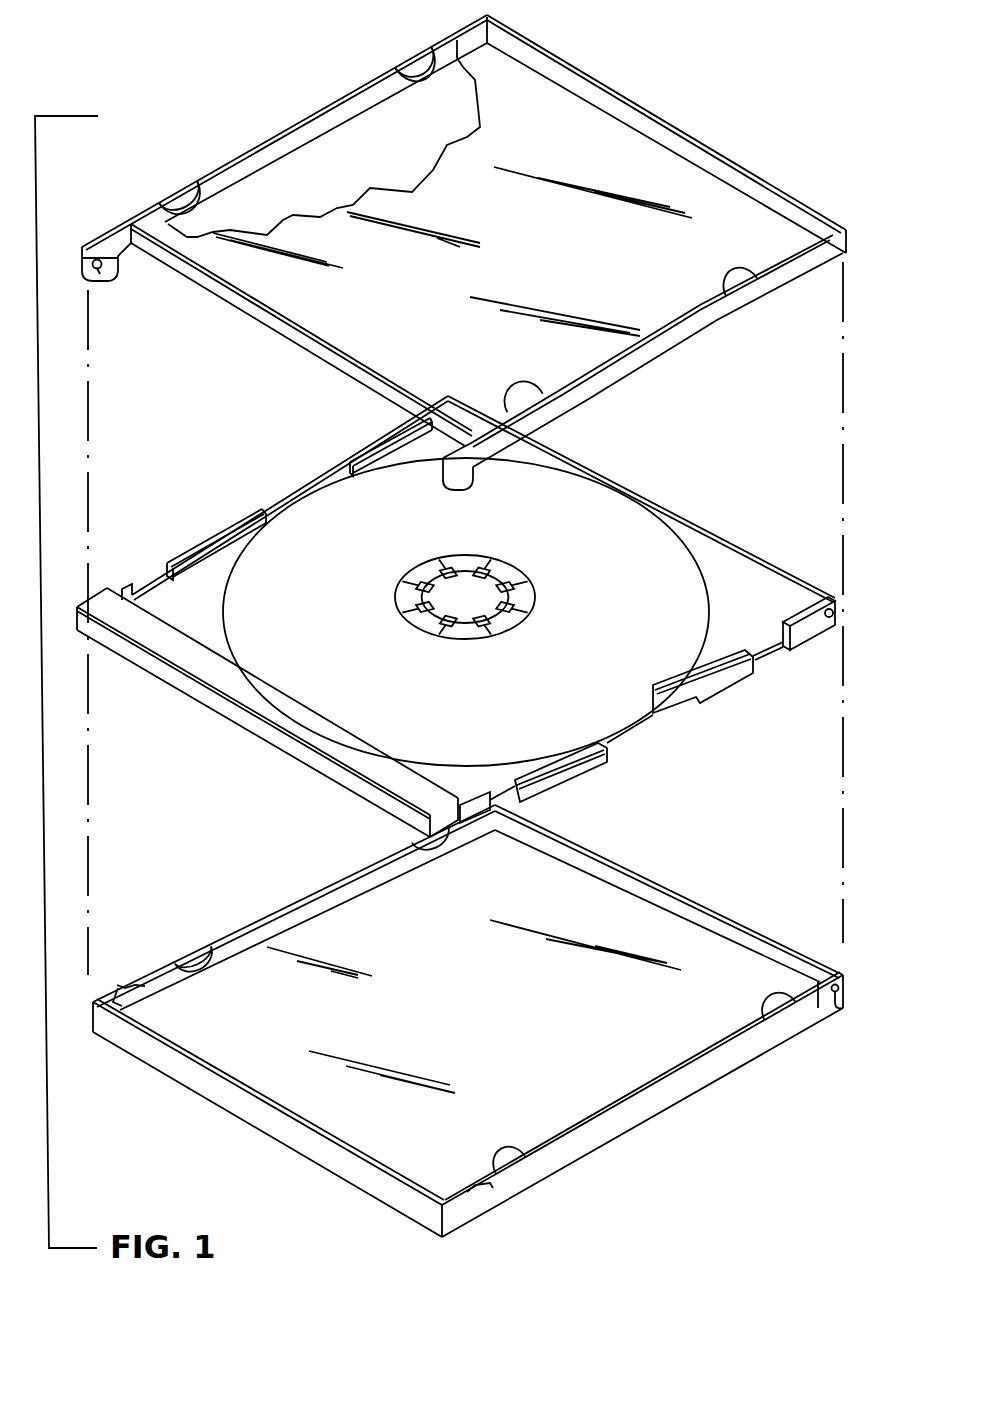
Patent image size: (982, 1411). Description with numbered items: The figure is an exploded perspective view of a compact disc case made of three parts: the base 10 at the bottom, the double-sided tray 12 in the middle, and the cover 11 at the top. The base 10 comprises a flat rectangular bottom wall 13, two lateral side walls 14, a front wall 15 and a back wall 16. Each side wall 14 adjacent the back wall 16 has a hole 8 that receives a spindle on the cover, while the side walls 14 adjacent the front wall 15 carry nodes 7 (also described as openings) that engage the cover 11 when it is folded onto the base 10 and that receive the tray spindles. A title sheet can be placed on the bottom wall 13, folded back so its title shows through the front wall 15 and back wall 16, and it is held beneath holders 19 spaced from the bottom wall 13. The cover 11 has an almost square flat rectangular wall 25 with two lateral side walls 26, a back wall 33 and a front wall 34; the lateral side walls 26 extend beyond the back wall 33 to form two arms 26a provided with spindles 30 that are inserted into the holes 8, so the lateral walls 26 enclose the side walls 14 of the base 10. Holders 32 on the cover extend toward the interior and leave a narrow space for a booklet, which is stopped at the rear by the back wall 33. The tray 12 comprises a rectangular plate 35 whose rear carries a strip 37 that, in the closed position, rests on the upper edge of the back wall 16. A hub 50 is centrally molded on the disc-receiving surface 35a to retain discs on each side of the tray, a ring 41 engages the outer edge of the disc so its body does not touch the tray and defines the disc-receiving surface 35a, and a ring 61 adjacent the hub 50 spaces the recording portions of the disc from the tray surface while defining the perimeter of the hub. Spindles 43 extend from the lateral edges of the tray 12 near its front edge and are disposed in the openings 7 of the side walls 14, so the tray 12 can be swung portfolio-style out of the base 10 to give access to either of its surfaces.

The nodes 7 is at (838, 1010).
The holes 8 is at (117, 985).
The base 10 is at (733, 906).
The cover 11 is at (760, 166).
The tray 12 is at (715, 522).
The bottom wall 13 is at (462, 1017).
The lateral side walls 14 is at (323, 880).
The front wall 15 is at (624, 868).
The back wall 16 is at (232, 1100).
The holders 19 is at (448, 845).
The flat rectangular wall 25 is at (284, 298).
The lateral side walls 26 is at (300, 121).
The arms 26a is at (92, 240).
The spindles 30 is at (99, 270).
The holders 32 is at (413, 75).
The back wall 33 is at (628, 100).
The front wall 34 is at (335, 358).
The rectangular plate 35 is at (740, 582).
The disc-receiving surface 35a is at (388, 681).
The strip 37 is at (253, 702).
The ring 41 is at (230, 627).
The spindles 43 is at (838, 614).
The hub 50 is at (476, 597).
The ring 61 is at (408, 612).